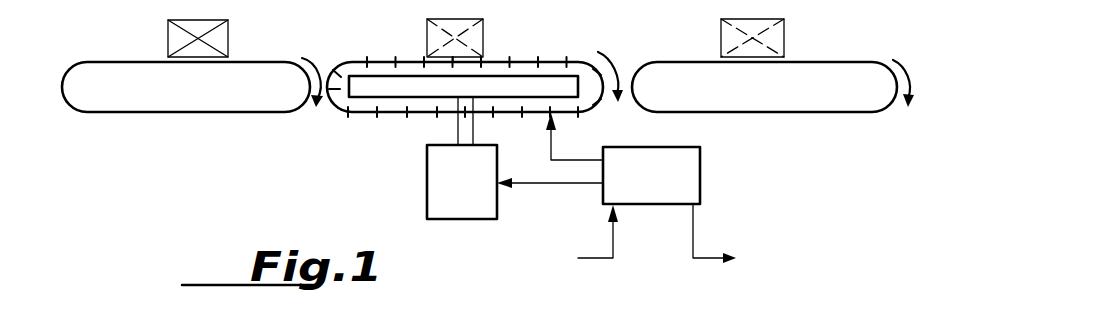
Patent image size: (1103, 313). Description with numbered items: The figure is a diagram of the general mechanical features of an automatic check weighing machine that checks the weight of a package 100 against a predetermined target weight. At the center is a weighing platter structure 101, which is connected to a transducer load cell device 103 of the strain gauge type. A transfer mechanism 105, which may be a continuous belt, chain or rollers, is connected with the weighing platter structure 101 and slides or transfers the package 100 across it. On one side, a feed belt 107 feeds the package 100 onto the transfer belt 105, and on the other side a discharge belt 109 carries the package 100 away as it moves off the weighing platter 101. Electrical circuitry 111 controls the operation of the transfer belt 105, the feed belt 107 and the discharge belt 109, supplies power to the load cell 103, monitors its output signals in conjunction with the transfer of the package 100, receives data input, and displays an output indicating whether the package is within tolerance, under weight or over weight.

The package 100 is at (223, 37).
The weighing platter structure 101 is at (367, 88).
The transducer load cell device 103 is at (432, 197).
The transfer mechanism 105 is at (418, 112).
The feed belt 107 is at (243, 113).
The discharge belt 109 is at (835, 113).
The electrical circuitry 111 is at (697, 177).